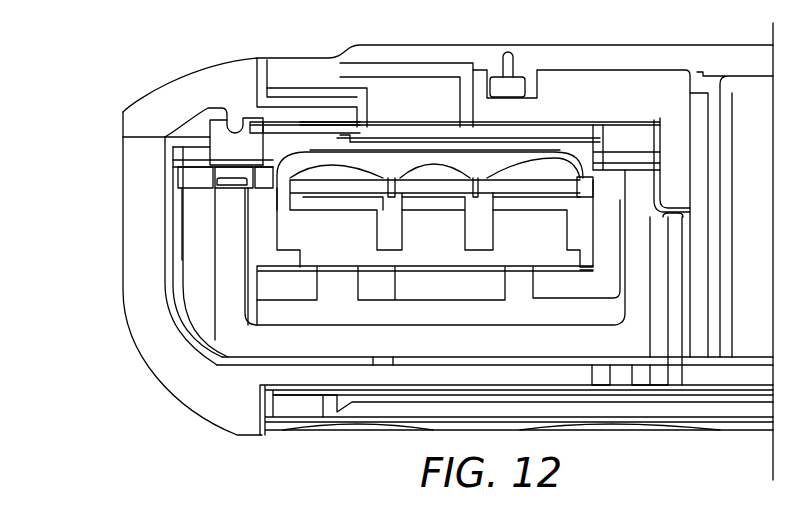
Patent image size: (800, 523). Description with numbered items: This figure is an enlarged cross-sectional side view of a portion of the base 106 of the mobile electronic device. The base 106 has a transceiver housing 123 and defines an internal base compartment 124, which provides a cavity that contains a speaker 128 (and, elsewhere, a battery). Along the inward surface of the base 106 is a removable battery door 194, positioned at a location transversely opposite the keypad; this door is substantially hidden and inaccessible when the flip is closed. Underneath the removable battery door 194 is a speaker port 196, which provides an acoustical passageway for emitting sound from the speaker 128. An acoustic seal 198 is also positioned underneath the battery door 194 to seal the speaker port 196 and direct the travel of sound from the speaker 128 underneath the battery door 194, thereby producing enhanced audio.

The base 106 is at (157, 363).
The transceiver housing 123 is at (124, 289).
The internal base compartment 124 is at (318, 173).
The speaker 128 is at (415, 222).
The removable battery door 194 is at (365, 55).
The speaker port 196 is at (282, 72).
The acoustic seal 198 is at (510, 87).